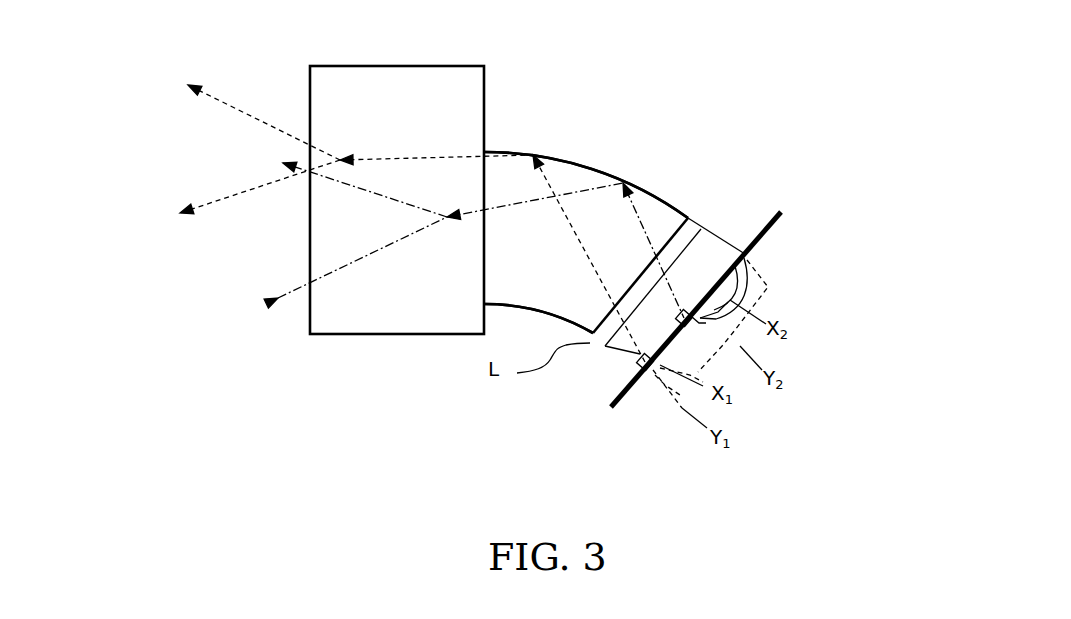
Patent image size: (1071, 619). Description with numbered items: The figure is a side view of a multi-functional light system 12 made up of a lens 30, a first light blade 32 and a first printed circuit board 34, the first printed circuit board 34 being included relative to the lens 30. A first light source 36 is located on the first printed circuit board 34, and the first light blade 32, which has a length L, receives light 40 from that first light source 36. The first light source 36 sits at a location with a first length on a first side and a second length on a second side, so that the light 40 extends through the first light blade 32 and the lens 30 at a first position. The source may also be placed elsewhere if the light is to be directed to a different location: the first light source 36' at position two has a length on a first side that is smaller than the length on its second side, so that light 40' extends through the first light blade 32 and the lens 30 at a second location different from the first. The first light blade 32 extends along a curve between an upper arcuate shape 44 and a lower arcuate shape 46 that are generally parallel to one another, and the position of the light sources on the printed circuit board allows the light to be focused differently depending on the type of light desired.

The multi-functional light system 12 is at (692, 82).
The lens 30 is at (372, 323).
The first light blade 32 is at (603, 168).
The first printed circuit board 34 is at (779, 221).
The first light source 36 is at (721, 290).
The first light source at position 2 36' is at (514, 399).
The light 40 is at (419, 254).
The light 40' is at (351, 223).
The upper arcuate shape 44 is at (562, 153).
The lower arcuate shape 46 is at (496, 307).